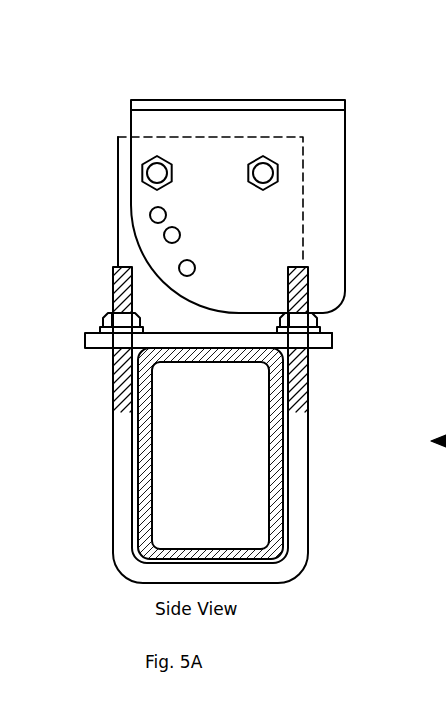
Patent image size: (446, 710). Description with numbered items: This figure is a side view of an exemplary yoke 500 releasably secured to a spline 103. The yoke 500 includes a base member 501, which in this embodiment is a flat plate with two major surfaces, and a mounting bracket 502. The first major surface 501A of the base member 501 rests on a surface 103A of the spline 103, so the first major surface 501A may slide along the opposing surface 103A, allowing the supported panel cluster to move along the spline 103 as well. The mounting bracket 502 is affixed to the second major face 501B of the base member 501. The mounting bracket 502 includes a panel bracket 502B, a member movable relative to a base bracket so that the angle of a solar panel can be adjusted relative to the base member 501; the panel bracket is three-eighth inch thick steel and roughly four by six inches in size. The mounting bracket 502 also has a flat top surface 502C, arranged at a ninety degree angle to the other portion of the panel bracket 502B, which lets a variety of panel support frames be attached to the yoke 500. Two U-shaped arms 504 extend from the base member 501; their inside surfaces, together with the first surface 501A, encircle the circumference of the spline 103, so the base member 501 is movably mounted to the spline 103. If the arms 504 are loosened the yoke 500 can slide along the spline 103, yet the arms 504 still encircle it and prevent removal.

The yoke 500 is at (126, 56).
The mounting bracket 502 is at (346, 188).
The panel bracket 502B is at (217, 128).
The top surface 502C is at (272, 100).
The U-shaped arms 504 is at (300, 563).
The base member 501 is at (97, 342).
The first major surface 501A is at (322, 350).
The second major face 501B is at (327, 332).
The spline 103 is at (276, 497).
The surface of the spline 103A is at (207, 350).